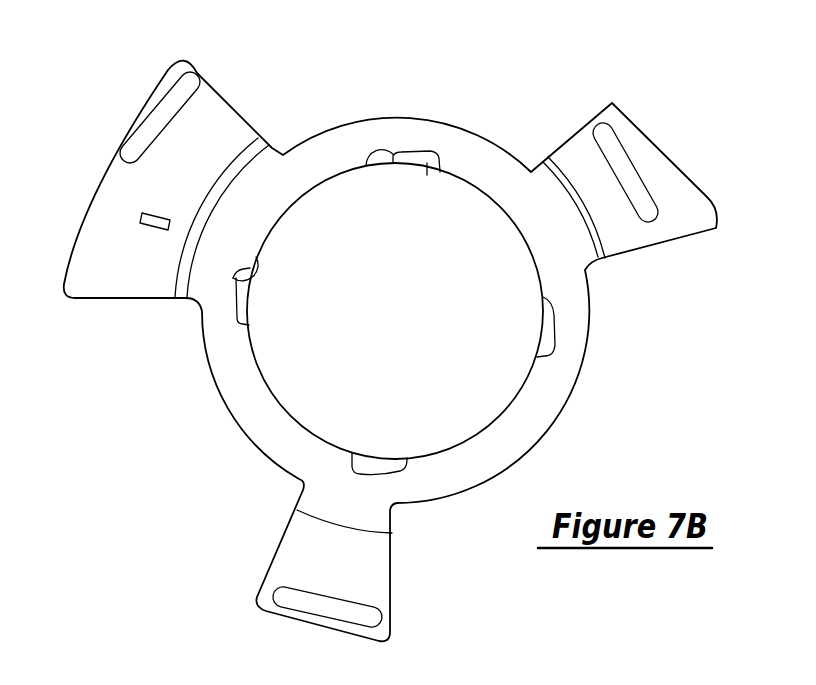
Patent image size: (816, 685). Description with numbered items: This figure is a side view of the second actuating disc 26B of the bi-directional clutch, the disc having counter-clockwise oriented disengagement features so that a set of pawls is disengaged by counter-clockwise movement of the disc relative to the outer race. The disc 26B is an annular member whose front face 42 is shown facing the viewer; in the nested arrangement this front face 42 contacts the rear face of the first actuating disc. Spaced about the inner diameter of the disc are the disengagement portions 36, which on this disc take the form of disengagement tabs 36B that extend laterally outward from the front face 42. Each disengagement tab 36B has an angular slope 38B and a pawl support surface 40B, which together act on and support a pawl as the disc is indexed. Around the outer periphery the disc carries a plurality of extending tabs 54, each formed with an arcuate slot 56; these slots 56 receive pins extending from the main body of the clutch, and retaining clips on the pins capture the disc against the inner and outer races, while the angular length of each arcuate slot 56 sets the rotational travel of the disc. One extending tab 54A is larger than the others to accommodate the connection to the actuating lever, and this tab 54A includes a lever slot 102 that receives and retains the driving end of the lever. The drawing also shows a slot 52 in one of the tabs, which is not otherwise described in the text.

The second actuating disc 26B is at (421, 337).
The front face 42 is at (540, 413).
The disengagement portions 36 is at (414, 203).
The disengagement tabs 36B is at (427, 162).
The angular slope 38B is at (366, 165).
The pawl support surface 40B is at (250, 258).
The slot 52 is at (608, 147).
The extending tabs 54 is at (693, 215).
The extending tab 54A is at (232, 118).
The arcuate slot 56 is at (160, 113).
The lever slot 102 is at (153, 230).